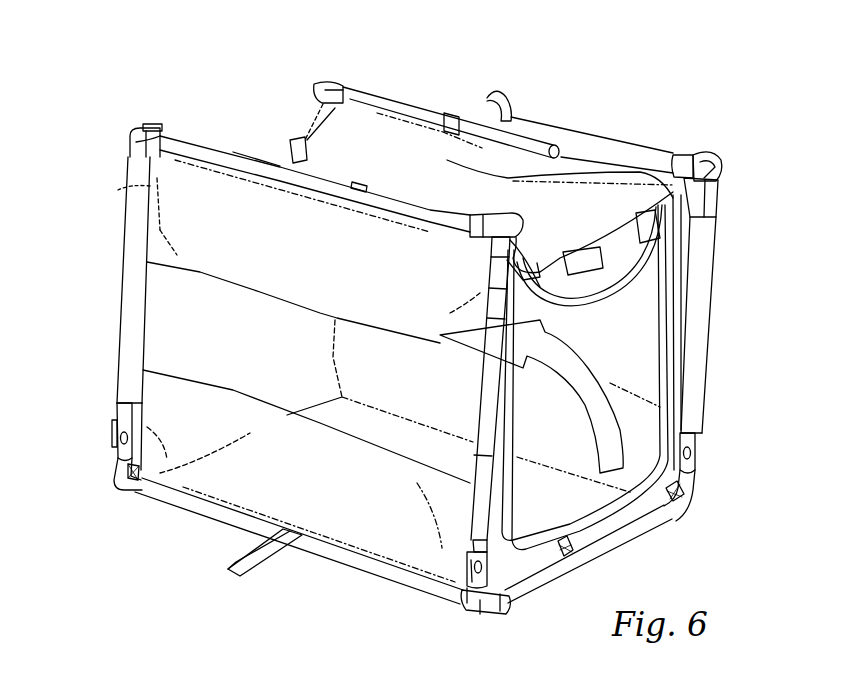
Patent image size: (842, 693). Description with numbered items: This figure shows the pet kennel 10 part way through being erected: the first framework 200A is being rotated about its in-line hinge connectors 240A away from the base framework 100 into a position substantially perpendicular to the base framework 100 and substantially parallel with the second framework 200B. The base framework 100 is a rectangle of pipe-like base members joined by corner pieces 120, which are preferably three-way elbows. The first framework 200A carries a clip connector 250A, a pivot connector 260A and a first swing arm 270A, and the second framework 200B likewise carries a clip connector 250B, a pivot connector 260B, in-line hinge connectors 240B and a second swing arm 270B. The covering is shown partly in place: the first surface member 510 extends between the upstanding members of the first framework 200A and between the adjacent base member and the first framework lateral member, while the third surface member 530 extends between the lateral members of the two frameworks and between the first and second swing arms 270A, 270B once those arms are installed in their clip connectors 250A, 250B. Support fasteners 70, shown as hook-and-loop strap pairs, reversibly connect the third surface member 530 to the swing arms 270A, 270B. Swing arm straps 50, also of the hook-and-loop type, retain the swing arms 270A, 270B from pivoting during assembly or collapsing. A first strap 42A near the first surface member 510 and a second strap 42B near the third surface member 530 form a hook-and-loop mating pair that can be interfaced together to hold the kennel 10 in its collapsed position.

The pet kennel 10 is at (96, 110).
The base framework 100 is at (663, 537).
The corner pieces 120 is at (474, 610).
The first framework 200A is at (118, 186).
The second framework 200B is at (725, 213).
The in-line hinge connectors 240A is at (100, 445).
The hinge joint 240B is at (704, 456).
The clip connector 250A is at (134, 121).
The clip connector 250B is at (712, 142).
The pivot connector 260A is at (533, 218).
The rear top rail connector 260B is at (312, 86).
The first swing arm 270A is at (258, 154).
The second swing arm 270B is at (372, 102).
The first strap 42A is at (250, 560).
The second strap 42B is at (511, 108).
The swing arm straps 50 is at (449, 112).
The first surface member 510 is at (175, 228).
The third surface member 530 is at (597, 168).
The support fasteners 70 is at (680, 234).